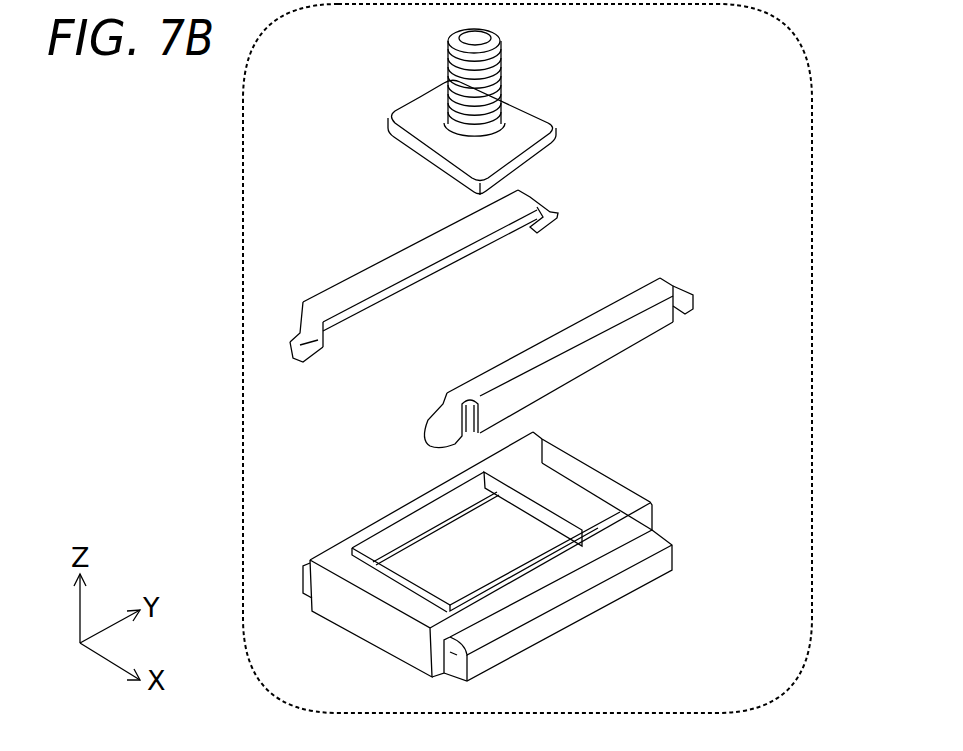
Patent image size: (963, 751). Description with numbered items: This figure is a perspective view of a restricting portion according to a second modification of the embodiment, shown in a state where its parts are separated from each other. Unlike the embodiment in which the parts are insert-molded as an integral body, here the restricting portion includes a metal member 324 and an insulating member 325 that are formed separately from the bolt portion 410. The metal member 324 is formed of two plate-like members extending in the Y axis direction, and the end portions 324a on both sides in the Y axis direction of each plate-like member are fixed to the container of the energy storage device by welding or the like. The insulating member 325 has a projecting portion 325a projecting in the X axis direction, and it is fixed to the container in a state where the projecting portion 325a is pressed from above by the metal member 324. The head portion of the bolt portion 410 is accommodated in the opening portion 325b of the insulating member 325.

The bolt portion 410 is at (537, 108).
The metal member 324 is at (491, 311).
The end portions 324a is at (437, 427).
The insulating member 325 is at (484, 549).
The projecting portion 325a is at (420, 498).
The opening portion 325b is at (415, 582).